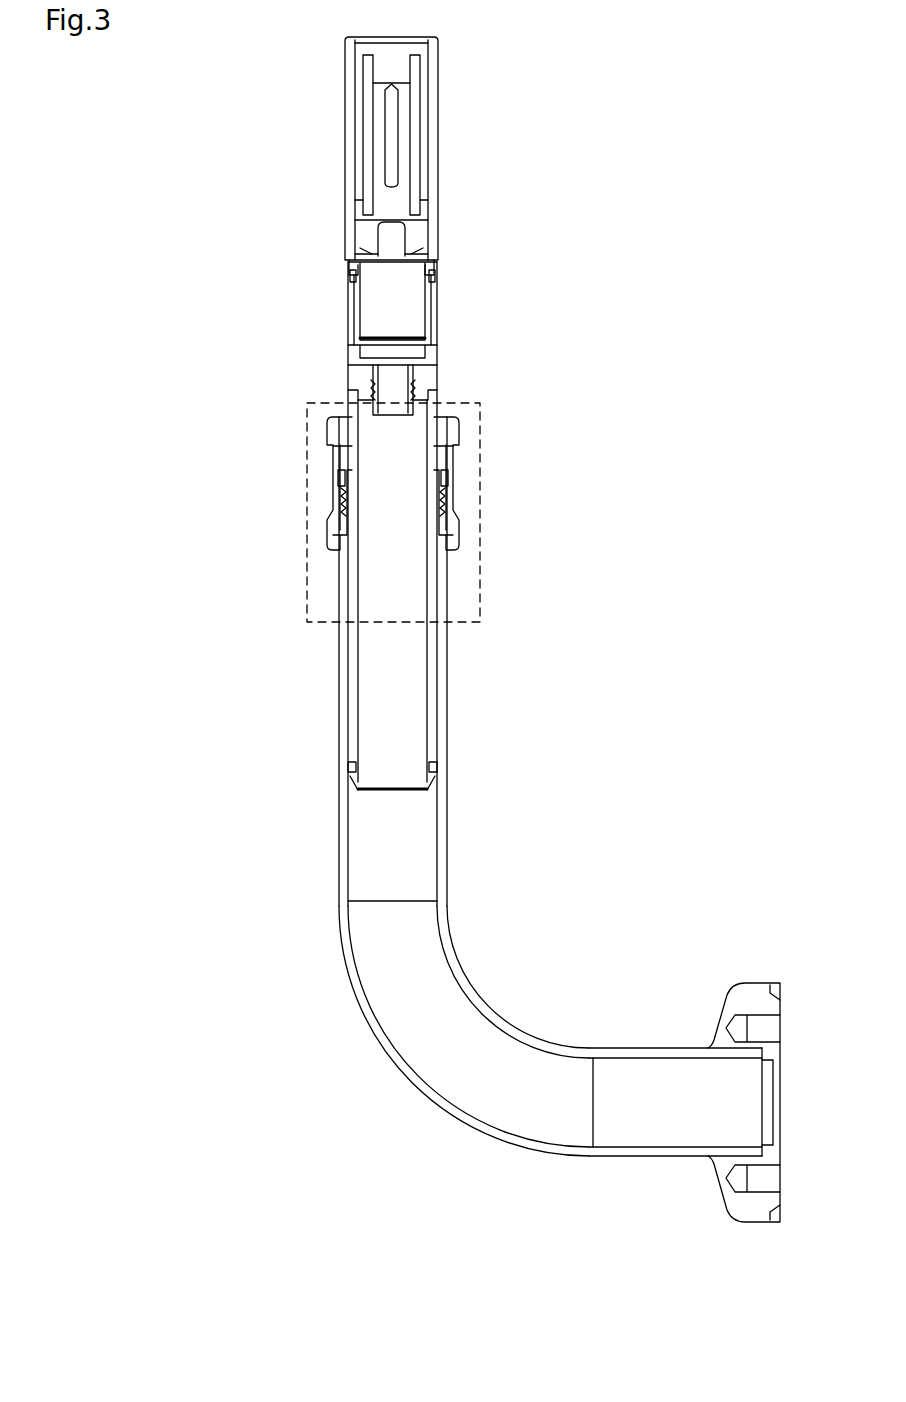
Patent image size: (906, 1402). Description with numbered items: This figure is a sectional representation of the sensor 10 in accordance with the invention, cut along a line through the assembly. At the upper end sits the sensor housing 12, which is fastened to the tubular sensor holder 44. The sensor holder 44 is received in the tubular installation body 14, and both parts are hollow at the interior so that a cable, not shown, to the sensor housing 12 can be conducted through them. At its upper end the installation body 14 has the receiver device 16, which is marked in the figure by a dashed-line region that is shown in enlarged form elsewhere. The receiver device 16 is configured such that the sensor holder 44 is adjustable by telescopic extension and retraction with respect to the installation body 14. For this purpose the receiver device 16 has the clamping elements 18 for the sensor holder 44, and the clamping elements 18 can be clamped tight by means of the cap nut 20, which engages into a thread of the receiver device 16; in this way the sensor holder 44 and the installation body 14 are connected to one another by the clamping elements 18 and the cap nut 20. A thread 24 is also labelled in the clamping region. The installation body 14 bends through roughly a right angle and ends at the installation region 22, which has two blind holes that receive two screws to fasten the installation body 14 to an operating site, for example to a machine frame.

The sensor 10 is at (472, 148).
The sensor housing 12 is at (438, 78).
The installation body 14 is at (448, 782).
The receiver device 16 is at (493, 493).
The clamping elements 18 is at (340, 458).
The cap nut 20 is at (458, 436).
The installation region 22 is at (698, 988).
The thread 24 is at (338, 502).
The sensor holder 44 is at (437, 332).